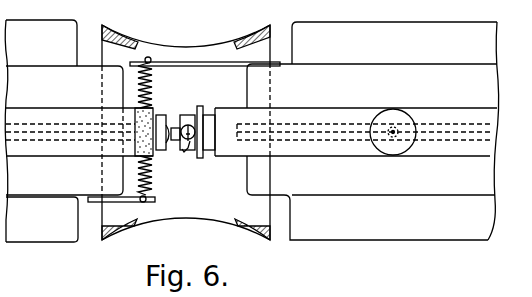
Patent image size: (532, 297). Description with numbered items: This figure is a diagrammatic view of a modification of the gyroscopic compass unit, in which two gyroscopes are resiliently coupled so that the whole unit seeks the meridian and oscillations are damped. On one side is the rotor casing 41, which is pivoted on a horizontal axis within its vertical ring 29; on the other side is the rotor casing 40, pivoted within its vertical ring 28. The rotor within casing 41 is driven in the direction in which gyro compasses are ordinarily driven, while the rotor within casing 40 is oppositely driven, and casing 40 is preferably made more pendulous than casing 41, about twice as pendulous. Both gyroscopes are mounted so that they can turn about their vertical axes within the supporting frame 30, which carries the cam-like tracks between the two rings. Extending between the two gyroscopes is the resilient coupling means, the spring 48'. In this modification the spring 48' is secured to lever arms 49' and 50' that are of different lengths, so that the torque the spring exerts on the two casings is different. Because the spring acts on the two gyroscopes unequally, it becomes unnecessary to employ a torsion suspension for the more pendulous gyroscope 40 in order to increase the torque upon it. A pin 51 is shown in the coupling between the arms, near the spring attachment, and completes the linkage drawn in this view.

The rotor casing 41 is at (64, 131).
The vertical ring 29 is at (28, 157).
The frame 30 is at (191, 214).
The lever arm 50' is at (205, 74).
The lever arm 49' is at (121, 208).
The spring 48' is at (159, 129).
The pin 51 is at (182, 150).
The vertical ring 28 is at (333, 156).
The rotor casing 40 is at (373, 131).